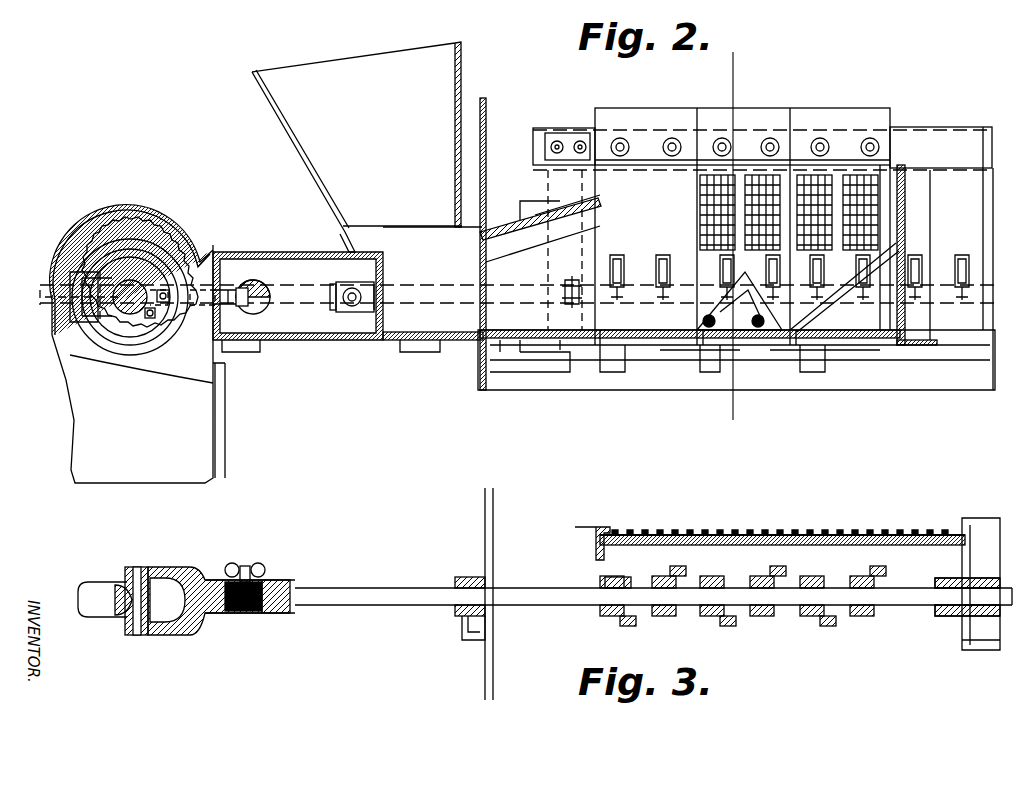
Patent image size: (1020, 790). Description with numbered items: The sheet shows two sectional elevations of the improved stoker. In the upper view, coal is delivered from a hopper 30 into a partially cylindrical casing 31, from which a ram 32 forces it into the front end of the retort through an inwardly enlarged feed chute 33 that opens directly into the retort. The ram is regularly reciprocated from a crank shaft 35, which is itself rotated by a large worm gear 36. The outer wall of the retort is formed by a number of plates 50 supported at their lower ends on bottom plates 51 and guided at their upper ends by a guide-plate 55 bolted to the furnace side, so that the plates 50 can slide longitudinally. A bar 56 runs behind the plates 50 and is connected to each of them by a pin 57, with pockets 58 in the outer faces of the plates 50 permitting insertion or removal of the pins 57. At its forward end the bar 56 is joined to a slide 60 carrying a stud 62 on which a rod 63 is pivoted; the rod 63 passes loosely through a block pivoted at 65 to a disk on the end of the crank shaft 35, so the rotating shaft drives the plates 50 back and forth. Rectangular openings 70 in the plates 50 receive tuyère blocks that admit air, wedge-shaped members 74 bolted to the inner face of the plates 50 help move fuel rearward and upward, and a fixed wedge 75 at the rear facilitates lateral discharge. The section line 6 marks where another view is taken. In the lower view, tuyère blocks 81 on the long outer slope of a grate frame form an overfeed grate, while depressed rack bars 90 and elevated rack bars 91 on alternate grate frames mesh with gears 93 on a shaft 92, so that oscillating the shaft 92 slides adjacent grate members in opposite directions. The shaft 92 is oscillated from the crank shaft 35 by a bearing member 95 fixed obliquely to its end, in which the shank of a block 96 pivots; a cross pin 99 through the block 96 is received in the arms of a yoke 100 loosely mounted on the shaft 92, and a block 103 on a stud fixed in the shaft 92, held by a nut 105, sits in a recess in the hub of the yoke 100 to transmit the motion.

In FIG. 2, the section line 6 is at (732, 234).
In FIG. 2, the hopper 30 is at (462, 50).
In FIG. 2, the partially cylindrical casing 31 is at (416, 340).
In FIG. 2, the ram 32 is at (298, 318).
In FIG. 2, the feed chute 33 is at (512, 236).
In FIG. 2, the crank shaft 35 is at (124, 262).
In FIG. 2, the worm gear 36 is at (142, 360).
In FIG. 2, the plates 50 is at (940, 205).
In FIG. 2, the bottom plates 51 is at (636, 333).
In FIG. 2, the guide-plate 55 is at (804, 122).
In FIG. 2, the bar 56 is at (938, 300).
In FIG. 2, the pin 57 is at (628, 290).
In FIG. 2, the pockets 58 is at (616, 280).
In FIG. 2, the slide 60 is at (430, 286).
In FIG. 2, the stud 62 is at (356, 288).
In FIG. 2, the rod 63 is at (290, 294).
In FIG. 2, the pivot 65 is at (166, 290).
In FIG. 2, the rectangular openings 70 is at (880, 190).
In FIG. 2, the wedge-shaped members 74 is at (740, 300).
In FIG. 2, the fixed wedge 75 is at (828, 312).
In FIG. 3, the tuyère blocks 81 is at (668, 535).
In FIG. 3, the depressed rack bars 90 is at (634, 626).
In FIG. 3, the elevated rack bars 91 is at (688, 570).
In FIG. 3, the shaft 92 is at (360, 588).
In FIG. 3, the gears 93 is at (605, 578).
In FIG. 3, the bearing member 95 is at (98, 590).
In FIG. 3, the block 96 is at (120, 612).
In FIG. 3, the cross pin 99 is at (137, 570).
In FIG. 3, the yoke 100 is at (186, 570).
In FIG. 3, the block 103 is at (270, 582).
In FIG. 3, the nut 105 is at (236, 565).